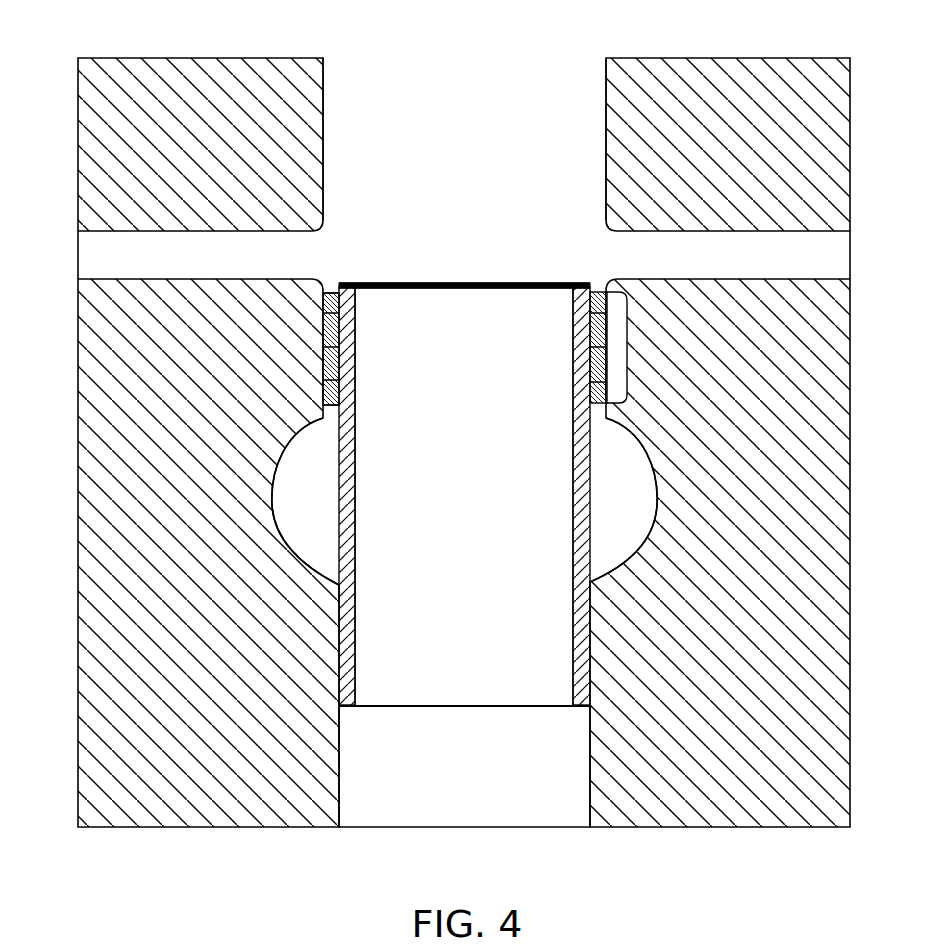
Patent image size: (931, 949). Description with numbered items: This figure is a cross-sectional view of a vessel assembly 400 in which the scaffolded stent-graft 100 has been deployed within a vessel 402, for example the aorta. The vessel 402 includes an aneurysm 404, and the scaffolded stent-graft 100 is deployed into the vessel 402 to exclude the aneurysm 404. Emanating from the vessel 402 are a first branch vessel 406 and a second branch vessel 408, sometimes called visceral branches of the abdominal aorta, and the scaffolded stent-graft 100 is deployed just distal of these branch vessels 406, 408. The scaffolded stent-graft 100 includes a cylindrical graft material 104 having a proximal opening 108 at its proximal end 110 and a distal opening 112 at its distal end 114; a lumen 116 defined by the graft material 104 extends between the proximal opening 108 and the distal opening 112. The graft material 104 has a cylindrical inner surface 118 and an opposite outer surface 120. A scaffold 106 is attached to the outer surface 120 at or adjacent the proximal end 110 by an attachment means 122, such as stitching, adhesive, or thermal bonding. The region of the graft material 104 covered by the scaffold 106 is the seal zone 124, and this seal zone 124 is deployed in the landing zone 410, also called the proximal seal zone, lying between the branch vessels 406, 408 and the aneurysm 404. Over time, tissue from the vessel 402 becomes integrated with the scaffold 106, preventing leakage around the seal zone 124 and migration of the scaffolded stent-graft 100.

The vessel assembly 400 is at (151, 42).
The vessel 402 is at (441, 176).
The first branch vessel 406 is at (161, 269).
The second branch vessel 408 is at (720, 269).
The landing zone 410 is at (628, 347).
The scaffolded stent-graft 100 is at (389, 272).
The graft material 104 is at (590, 537).
The scaffold 106 is at (322, 333).
The proximal opening 108 is at (449, 260).
The proximal end 110 is at (546, 283).
The distal opening 112 is at (522, 721).
The distal end 114 is at (373, 707).
The lumen 116 is at (444, 575).
The inner surface 118 is at (356, 458).
The outer surface 120 is at (338, 473).
The attachment means 122 is at (357, 330).
The seal zone 124 is at (571, 292).
The aneurysm 404 is at (641, 477).